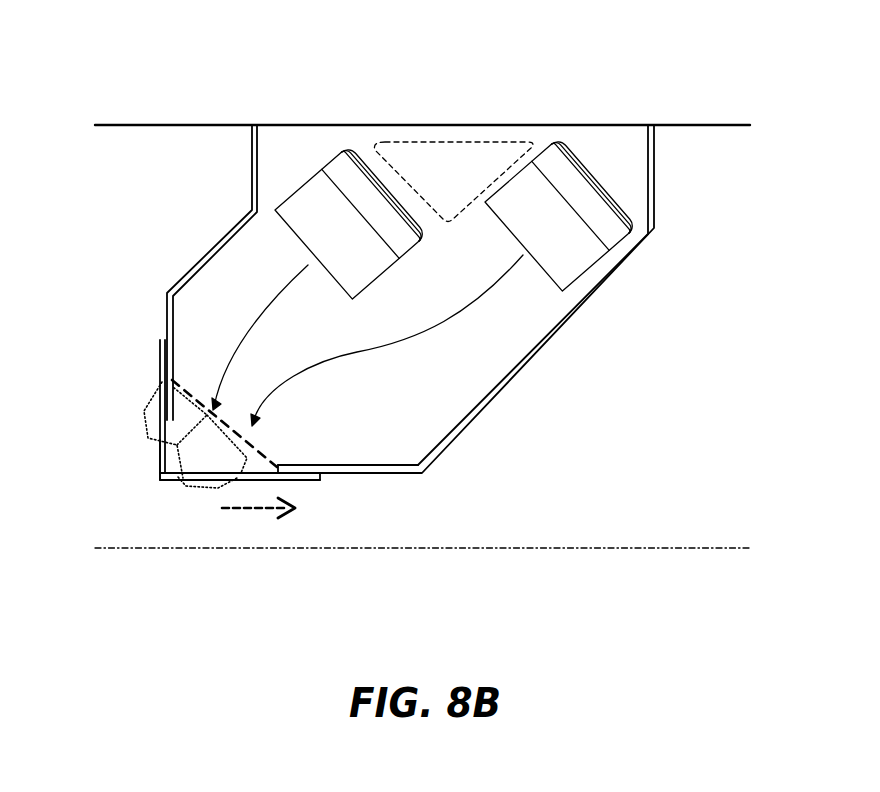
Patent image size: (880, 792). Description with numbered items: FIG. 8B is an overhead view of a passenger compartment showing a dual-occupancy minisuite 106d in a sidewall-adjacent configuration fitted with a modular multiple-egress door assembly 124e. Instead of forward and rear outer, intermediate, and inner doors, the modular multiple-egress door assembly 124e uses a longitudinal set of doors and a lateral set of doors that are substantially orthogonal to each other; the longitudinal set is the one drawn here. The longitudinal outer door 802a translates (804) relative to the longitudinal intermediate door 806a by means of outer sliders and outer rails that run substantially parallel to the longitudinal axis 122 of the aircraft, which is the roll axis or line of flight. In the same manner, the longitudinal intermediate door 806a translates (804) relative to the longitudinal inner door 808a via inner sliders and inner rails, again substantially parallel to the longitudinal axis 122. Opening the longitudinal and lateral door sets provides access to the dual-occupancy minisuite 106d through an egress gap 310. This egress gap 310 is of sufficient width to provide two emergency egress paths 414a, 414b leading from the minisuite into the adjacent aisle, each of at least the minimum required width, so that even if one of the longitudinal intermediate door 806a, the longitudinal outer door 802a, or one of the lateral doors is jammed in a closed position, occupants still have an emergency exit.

The modular multiple-egress door assembly 124e is at (83, 70).
The dual-occupancy minisuite 106d is at (620, 265).
The egress gap 310 is at (253, 445).
The emergency egress path 414a is at (152, 418).
The emergency egress path 414b is at (205, 458).
The longitudinal outer door 802a is at (177, 480).
The longitudinal intermediate door 806a is at (300, 474).
The longitudinal inner door 808a is at (328, 473).
The translation 804 is at (255, 508).
The longitudinal axis 122 is at (632, 546).